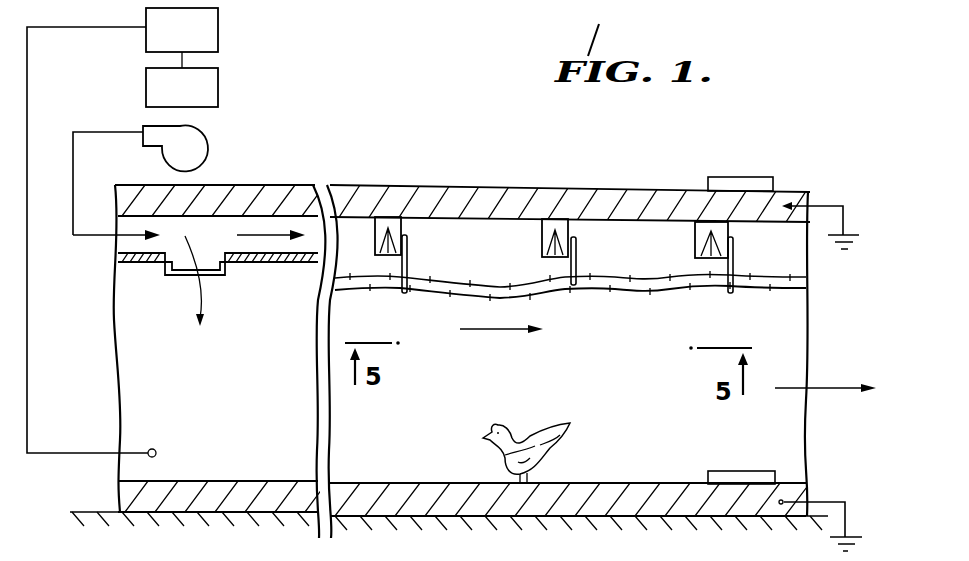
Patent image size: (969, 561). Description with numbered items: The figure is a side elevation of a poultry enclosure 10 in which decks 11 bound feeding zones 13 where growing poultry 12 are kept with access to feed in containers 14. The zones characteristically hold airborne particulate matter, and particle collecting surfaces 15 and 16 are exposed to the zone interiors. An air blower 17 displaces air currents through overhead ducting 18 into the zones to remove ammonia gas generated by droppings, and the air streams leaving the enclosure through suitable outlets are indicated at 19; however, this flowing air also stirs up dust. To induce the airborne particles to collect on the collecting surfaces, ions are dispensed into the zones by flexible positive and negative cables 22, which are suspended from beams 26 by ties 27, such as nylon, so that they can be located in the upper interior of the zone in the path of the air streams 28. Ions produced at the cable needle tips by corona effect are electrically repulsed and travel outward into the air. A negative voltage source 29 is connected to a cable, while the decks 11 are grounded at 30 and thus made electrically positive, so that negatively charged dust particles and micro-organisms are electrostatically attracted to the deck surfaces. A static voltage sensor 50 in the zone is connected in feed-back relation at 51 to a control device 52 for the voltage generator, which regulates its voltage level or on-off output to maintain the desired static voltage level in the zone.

The poultry enclosure 10 is at (453, 178).
The decks 11 is at (665, 190).
The growing poultry 12 is at (544, 416).
The feeding zones 13 is at (260, 371).
The feed containers 14 is at (756, 177).
The particle collecting surface 15 is at (262, 263).
The particle collecting surface 16 is at (389, 482).
The air blower 17 is at (198, 147).
The overhead ducting 18 is at (270, 228).
The air stream outlets 19 is at (836, 390).
The cables 22 is at (494, 268).
The beams 26 is at (388, 222).
The ties 27 is at (408, 245).
The air streams 28 is at (473, 331).
The negative voltage source 29 is at (210, 83).
The ground 30 is at (852, 215).
The static voltage sensor 50 is at (152, 449).
The feed-back connection 51 is at (29, 265).
The control device 52 is at (206, 23).